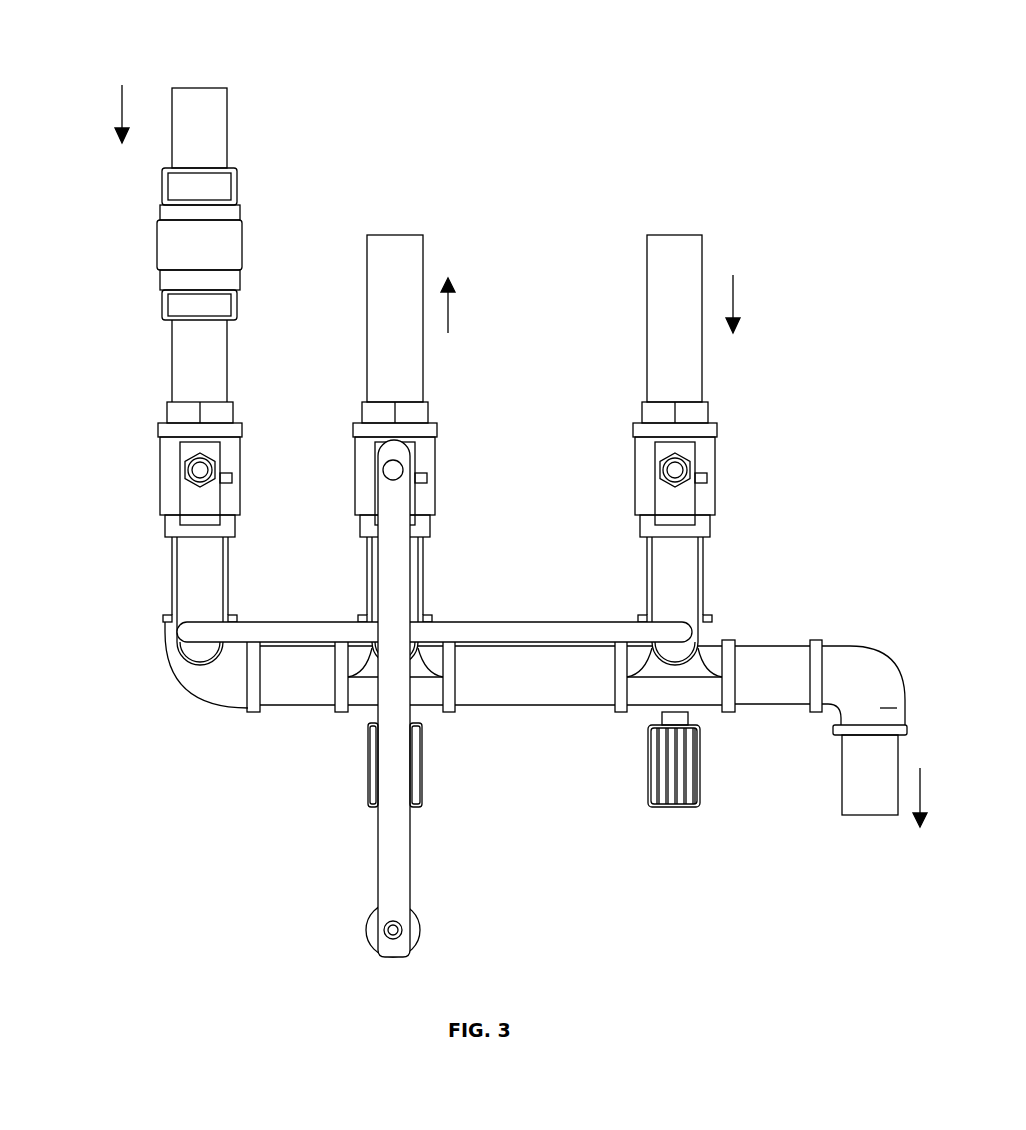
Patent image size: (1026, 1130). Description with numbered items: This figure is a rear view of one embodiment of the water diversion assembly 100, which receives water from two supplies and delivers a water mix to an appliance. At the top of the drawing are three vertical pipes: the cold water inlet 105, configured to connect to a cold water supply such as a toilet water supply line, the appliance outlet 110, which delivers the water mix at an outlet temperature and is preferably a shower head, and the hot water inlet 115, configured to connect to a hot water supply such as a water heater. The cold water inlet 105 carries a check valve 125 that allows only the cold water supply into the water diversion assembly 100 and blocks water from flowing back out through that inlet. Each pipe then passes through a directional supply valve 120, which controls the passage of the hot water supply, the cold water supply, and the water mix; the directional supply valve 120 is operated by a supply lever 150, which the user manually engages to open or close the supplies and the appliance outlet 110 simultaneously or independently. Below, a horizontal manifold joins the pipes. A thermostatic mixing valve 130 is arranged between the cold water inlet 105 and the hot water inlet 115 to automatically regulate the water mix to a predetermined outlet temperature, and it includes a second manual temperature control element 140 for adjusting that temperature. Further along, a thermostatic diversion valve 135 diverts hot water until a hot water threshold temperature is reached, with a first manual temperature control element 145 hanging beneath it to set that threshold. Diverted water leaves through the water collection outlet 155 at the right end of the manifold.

The water diversion assembly 100 is at (638, 113).
The cold water inlet 105 is at (190, 72).
The appliance outlet 110 is at (395, 223).
The hot water inlet 115 is at (667, 223).
The directional supply valve 120 is at (157, 468).
The check valve 125 is at (185, 248).
The thermostatic mixing valve 130 is at (358, 697).
The thermostatic diversion valve 135 is at (660, 697).
The second manual temperature control element 140 is at (365, 770).
The first manual temperature control element 145 is at (650, 812).
The supply lever 150 is at (367, 947).
The water collection outlet 155 is at (870, 830).